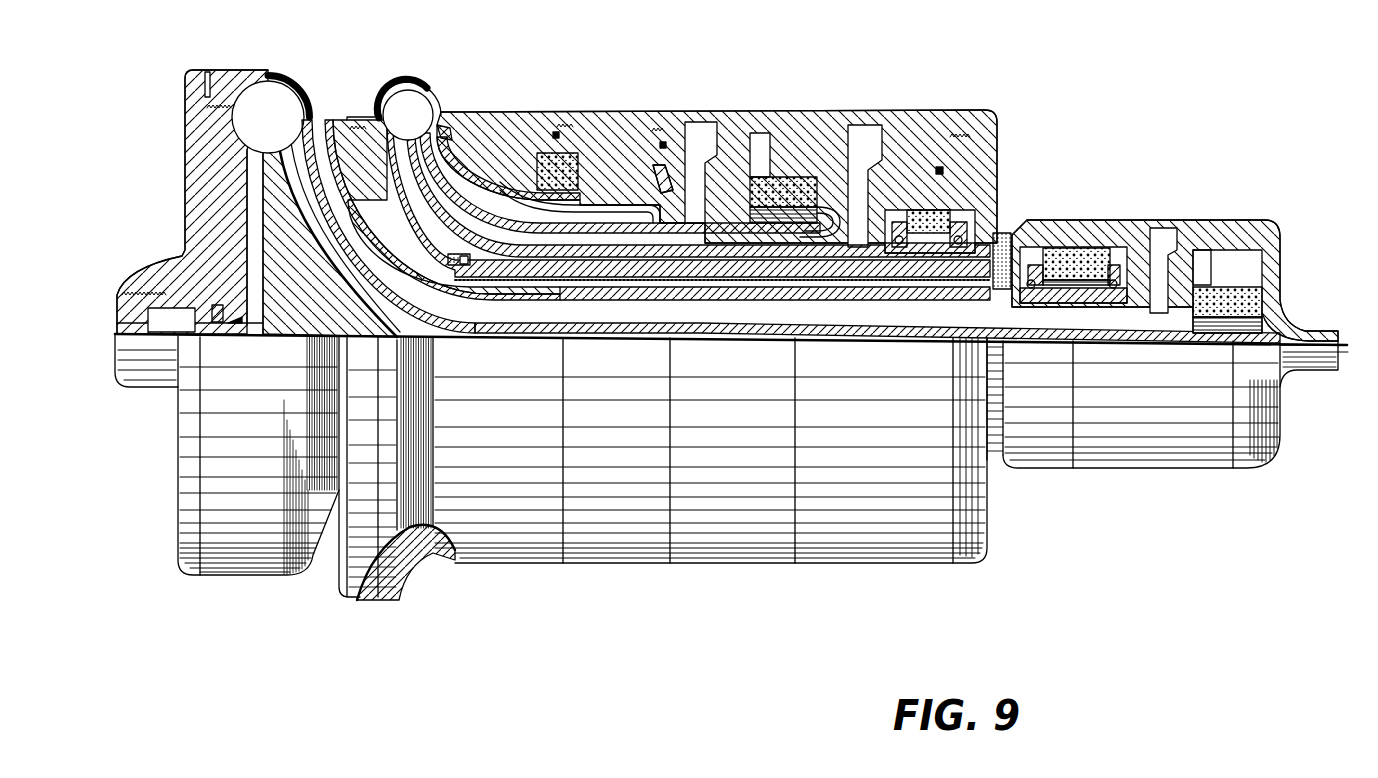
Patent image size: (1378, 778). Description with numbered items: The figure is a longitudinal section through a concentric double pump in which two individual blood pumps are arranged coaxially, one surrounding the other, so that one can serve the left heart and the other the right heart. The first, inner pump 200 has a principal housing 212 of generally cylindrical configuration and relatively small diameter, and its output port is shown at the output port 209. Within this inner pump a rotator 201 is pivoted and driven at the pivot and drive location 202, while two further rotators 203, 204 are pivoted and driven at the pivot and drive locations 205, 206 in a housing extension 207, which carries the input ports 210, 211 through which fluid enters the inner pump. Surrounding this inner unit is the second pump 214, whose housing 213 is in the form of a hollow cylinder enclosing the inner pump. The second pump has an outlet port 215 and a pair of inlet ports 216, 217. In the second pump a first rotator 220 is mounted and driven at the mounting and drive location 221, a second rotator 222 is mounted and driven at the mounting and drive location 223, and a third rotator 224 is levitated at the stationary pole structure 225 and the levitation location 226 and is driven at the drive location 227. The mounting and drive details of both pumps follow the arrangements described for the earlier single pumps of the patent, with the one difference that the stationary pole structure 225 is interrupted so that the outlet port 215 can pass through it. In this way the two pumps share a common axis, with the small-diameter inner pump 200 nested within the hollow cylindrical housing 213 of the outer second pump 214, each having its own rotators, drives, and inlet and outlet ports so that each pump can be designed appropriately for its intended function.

The first inner pump 200 is at (246, 579).
The rotator 201 is at (327, 324).
The pivot and drive location 202 is at (190, 330).
The further rotator 203 is at (733, 327).
The further rotator 204 is at (621, 300).
The pivot and drive location 205 is at (1263, 291).
The pivot and drive location 206 is at (1093, 245).
The housing extension 207 is at (1270, 233).
The output port 209 is at (267, 84).
The input port 210 is at (1320, 346).
The input port 211 is at (1167, 232).
The principal housing 212 is at (316, 107).
The housing 213 is at (643, 548).
The second pump 214 is at (985, 160).
The outlet port 215 is at (406, 92).
The inlet port 216 is at (697, 121).
The inlet port 217 is at (864, 125).
The first rotator 220 is at (539, 248).
The mounting and drive location 221 is at (958, 218).
The second rotator 222 is at (598, 222).
The mounting and drive location 223 is at (802, 175).
The third rotator 224 is at (512, 161).
The stationary pole structure 225 is at (443, 127).
The levitation location 226 is at (658, 180).
The drive location 227 is at (576, 152).